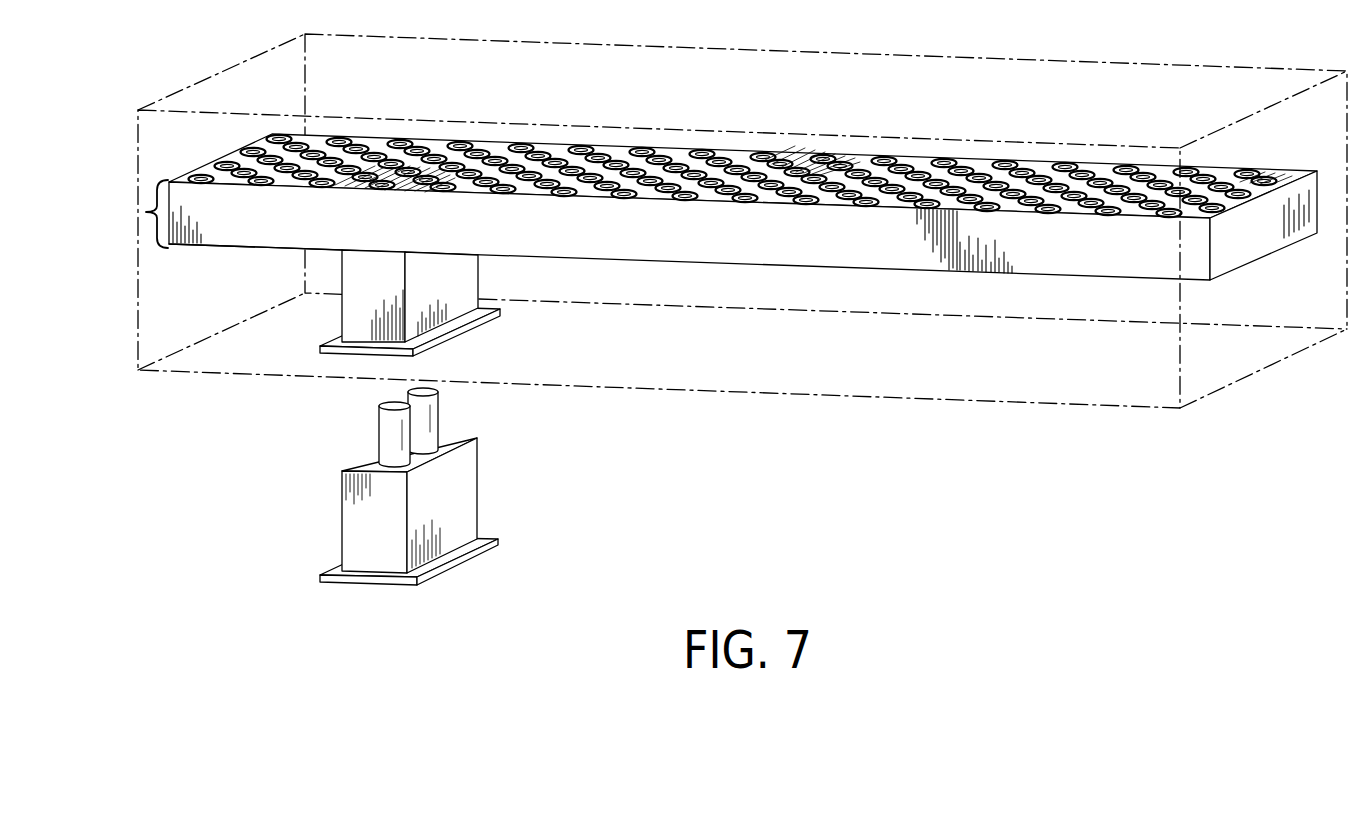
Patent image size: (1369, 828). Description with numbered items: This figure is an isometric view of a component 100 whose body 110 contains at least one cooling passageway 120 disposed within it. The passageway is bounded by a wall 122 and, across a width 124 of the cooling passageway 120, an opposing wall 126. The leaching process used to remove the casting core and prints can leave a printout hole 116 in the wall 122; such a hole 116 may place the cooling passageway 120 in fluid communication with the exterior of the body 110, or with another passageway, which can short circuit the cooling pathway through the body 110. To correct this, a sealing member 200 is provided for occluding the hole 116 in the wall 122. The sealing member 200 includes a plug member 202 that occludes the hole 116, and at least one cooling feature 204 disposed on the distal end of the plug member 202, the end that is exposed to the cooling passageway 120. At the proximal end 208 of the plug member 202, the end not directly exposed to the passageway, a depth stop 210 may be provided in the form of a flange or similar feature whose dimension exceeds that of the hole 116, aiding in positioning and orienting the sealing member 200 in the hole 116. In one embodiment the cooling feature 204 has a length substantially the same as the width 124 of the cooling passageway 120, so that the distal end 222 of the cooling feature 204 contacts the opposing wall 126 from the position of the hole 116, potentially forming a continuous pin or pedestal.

The component 100 is at (687, 292).
The body 110 is at (1100, 372).
The printout hole 116 is at (463, 292).
The cooling passageway 120 is at (633, 240).
The wall 122 is at (267, 250).
The width 124 is at (145, 212).
The opposing wall 126 is at (572, 157).
The sealing member 200 is at (363, 539).
The plug member 202 is at (465, 506).
The cooling feature 204 is at (371, 421).
The proximal end 208 is at (334, 605).
The depth stop 210 is at (438, 582).
The distal end 222 is at (440, 398).